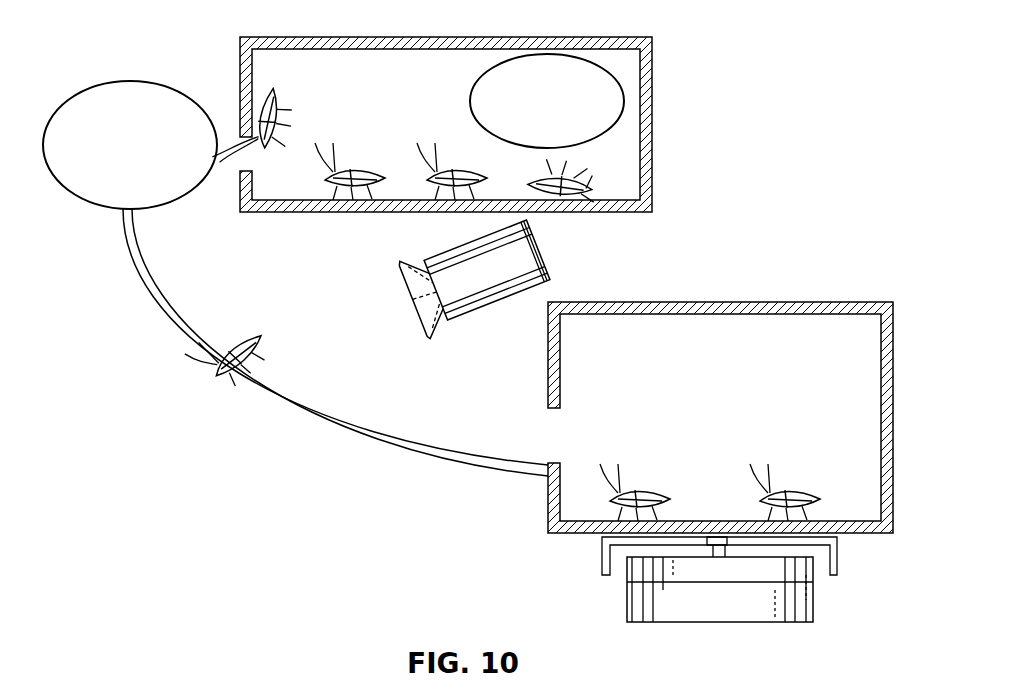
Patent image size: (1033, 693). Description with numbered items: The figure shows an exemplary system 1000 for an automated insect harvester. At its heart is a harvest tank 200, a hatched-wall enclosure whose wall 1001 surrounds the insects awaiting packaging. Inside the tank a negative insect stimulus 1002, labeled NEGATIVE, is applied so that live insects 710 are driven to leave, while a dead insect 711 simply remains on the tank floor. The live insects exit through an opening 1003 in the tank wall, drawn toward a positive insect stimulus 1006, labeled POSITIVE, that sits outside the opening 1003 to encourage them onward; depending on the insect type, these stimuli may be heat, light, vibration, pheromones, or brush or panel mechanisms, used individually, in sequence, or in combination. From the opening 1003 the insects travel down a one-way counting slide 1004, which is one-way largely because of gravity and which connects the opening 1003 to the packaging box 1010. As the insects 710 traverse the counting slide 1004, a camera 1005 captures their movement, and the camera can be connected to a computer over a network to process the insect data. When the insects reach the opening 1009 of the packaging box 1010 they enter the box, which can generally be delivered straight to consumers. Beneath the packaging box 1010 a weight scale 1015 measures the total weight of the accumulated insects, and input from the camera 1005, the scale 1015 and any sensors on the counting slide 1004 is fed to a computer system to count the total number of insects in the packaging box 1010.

The automated insect harvester system 1000 is at (798, 197).
The harvest tank 200 is at (655, 38).
The container wall 1001 is at (654, 133).
The negative stimulus region 1002 is at (624, 97).
The dead insect 711 is at (624, 183).
The live insect 710 is at (444, 168).
The opening 1003 is at (240, 146).
The positive insect stimulus 1006 is at (110, 83).
The one-way counting slide 1004 is at (200, 370).
The camera 1005 is at (550, 247).
The opening of packaging box 1009 is at (548, 418).
The packaging box 1010 is at (893, 372).
The weight scale 1015 is at (627, 590).